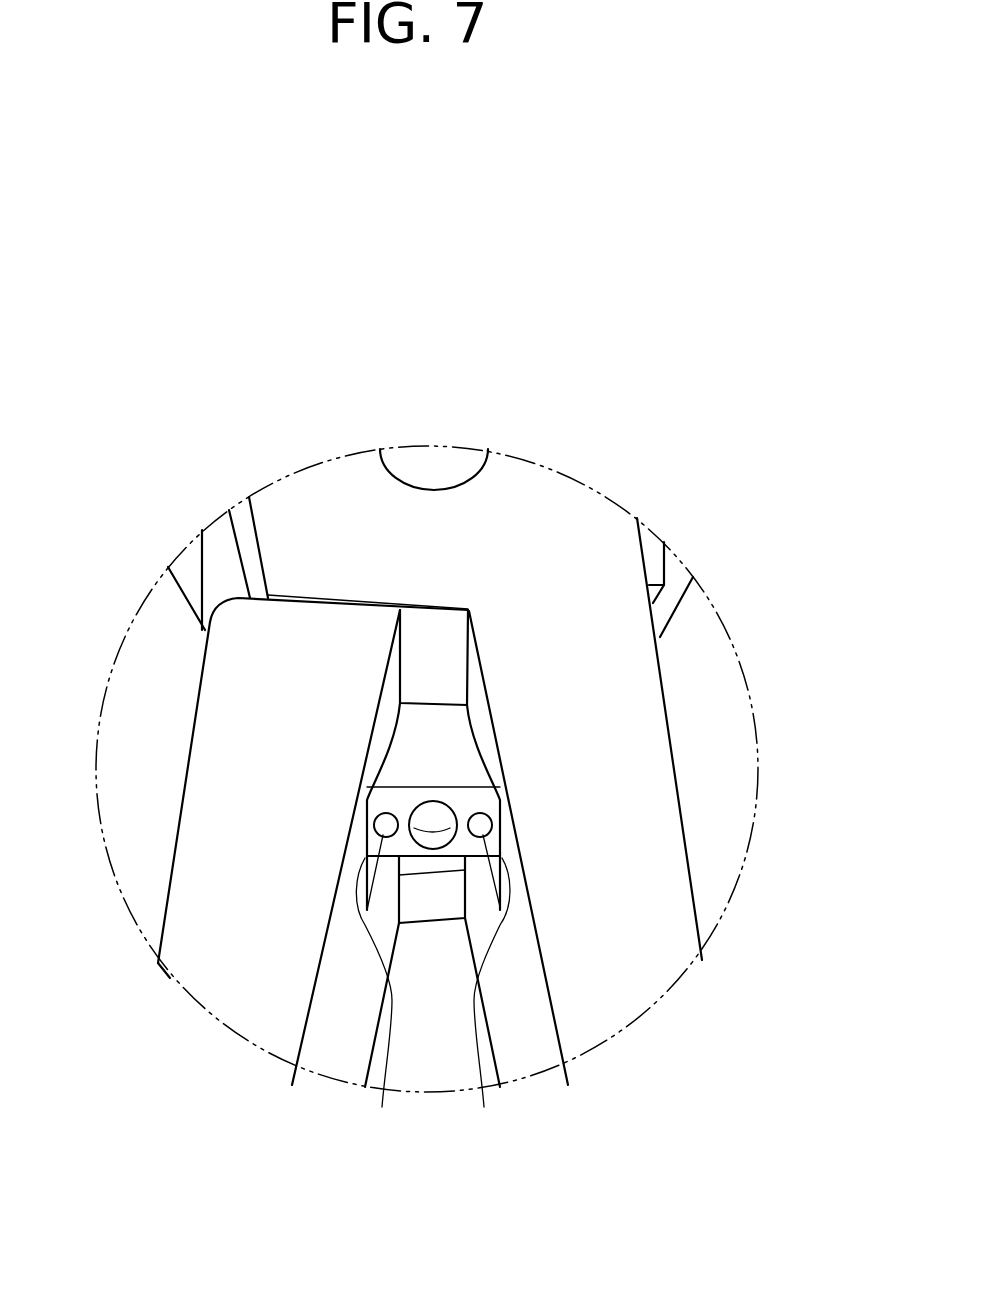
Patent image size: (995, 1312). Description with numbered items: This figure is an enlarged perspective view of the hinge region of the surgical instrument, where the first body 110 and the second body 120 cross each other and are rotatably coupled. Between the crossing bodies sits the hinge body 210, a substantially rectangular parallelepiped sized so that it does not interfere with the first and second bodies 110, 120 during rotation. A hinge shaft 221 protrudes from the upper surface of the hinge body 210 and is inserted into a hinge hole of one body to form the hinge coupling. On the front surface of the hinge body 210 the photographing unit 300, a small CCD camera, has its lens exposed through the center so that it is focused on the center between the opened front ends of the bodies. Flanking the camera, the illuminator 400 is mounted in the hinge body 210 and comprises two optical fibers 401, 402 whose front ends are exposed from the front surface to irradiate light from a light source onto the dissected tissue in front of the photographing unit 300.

The first body 110 is at (692, 803).
The second body 120 is at (178, 783).
The hinge body 210 is at (448, 743).
The hinge shaft 221 is at (428, 463).
The photographing unit 300 is at (442, 815).
The illuminator 400 is at (480, 1140).
The optical fiber 401 is at (379, 978).
The optical fiber 402 is at (489, 978).